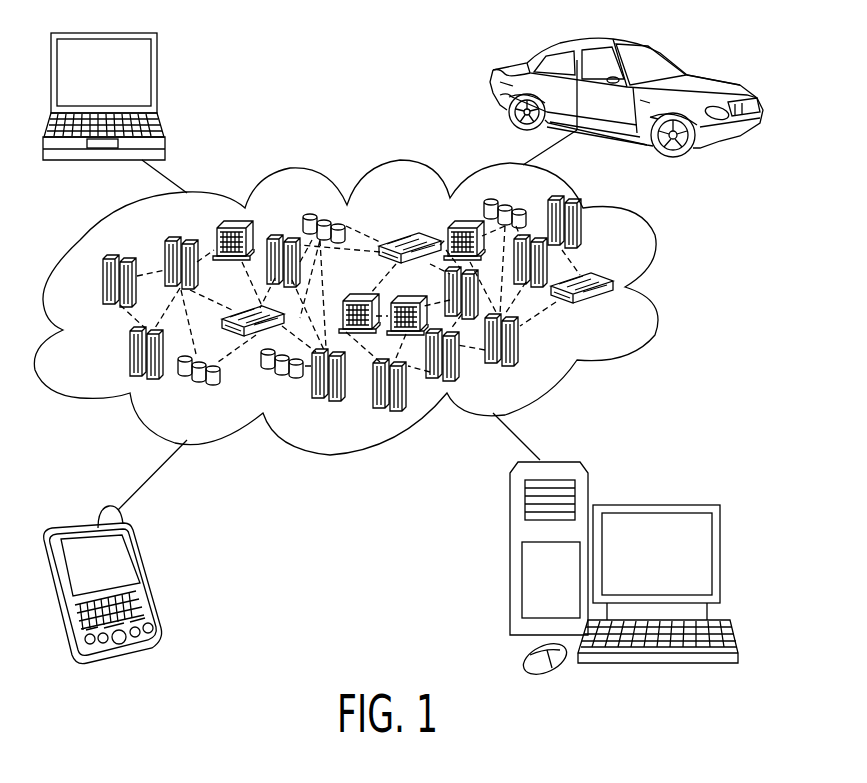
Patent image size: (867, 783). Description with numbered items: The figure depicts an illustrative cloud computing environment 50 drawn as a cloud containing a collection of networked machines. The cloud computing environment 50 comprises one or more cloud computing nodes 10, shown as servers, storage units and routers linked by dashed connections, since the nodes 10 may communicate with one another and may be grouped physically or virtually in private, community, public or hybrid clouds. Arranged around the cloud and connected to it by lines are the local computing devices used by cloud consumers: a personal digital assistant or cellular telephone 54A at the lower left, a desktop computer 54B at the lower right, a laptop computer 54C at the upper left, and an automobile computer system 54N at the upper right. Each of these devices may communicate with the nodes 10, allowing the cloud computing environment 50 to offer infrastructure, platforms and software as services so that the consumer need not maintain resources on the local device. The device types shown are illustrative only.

The cloud computing node 10 is at (398, 357).
The cloud computing environment 50 is at (656, 285).
The personal digital assistant or cellular telephone 54A is at (148, 575).
The desktop computer 54B is at (655, 503).
The laptop computer 54C is at (157, 83).
The automobile computer system 54N is at (493, 95).